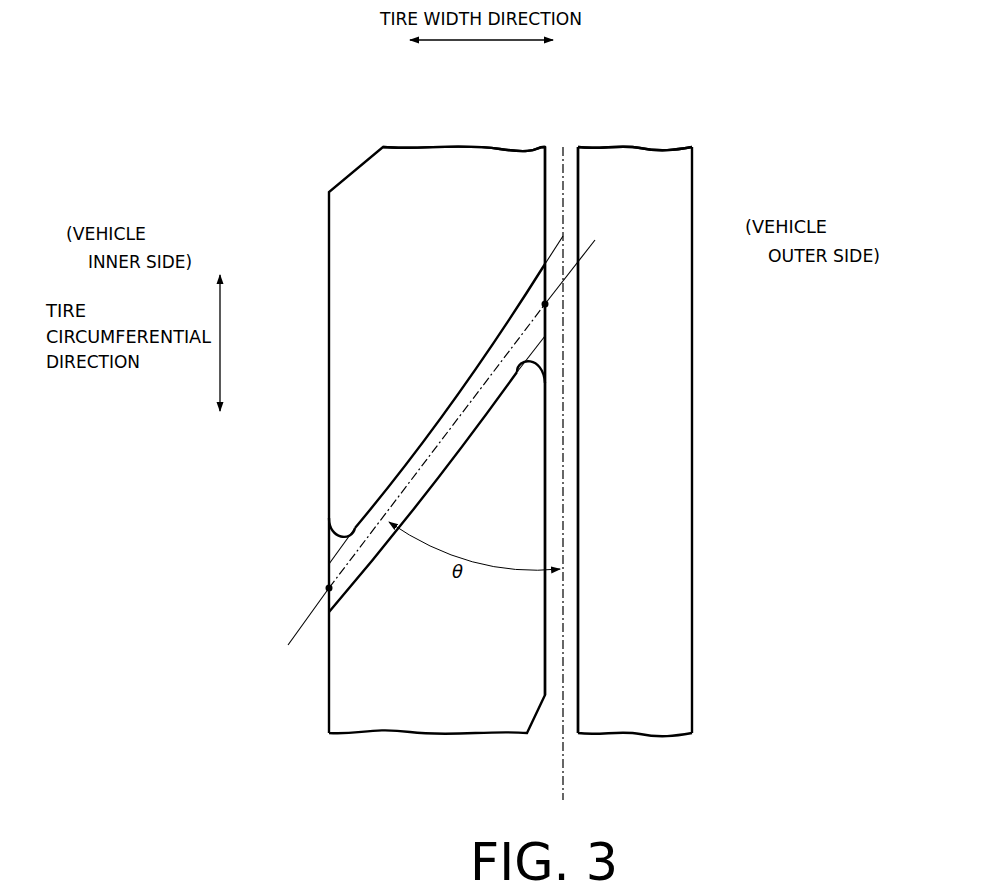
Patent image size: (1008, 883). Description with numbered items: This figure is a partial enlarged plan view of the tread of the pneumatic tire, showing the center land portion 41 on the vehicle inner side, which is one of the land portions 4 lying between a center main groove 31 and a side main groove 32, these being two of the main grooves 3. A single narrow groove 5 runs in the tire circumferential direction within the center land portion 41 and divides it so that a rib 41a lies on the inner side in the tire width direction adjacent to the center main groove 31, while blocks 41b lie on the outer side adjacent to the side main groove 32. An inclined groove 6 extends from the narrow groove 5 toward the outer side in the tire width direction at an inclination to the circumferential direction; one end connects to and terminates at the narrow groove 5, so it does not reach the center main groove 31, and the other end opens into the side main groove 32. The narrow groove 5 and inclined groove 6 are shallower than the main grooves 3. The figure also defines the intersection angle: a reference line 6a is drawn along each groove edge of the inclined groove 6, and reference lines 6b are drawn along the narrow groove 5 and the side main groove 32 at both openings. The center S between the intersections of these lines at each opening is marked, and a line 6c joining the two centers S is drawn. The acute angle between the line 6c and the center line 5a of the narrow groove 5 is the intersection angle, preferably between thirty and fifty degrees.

The main grooves 3 is at (306, 212).
The land portions 4 is at (413, 158).
The narrow groove 5 is at (577, 720).
The center line of the narrow groove 5a is at (562, 778).
The inclined grooves 6 is at (500, 451).
The reference line extending along a groove edge of the inclined groove 6a is at (565, 234).
The reference line extending along the narrow groove and the side main groove 6b is at (549, 368).
The line connecting the centers 6c is at (392, 505).
The center main groove 31 is at (714, 186).
The side main groove 32 is at (399, 424).
The center land portion 41 is at (464, 123).
The rib 41a is at (628, 158).
The blocks 41b is at (464, 123).
The center between intersections S is at (549, 305).